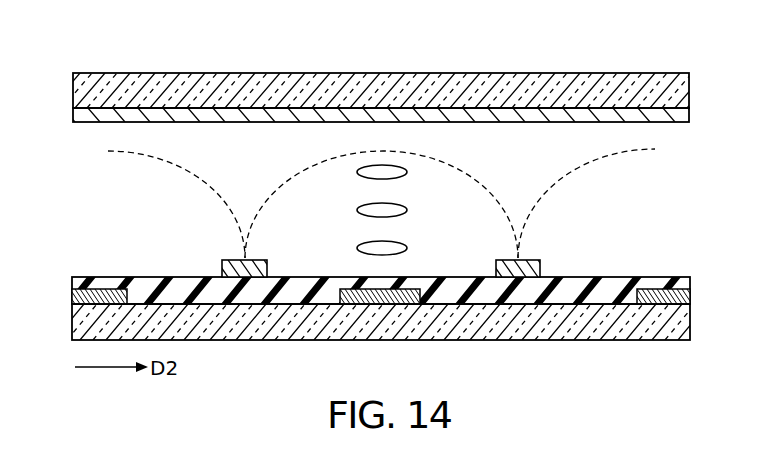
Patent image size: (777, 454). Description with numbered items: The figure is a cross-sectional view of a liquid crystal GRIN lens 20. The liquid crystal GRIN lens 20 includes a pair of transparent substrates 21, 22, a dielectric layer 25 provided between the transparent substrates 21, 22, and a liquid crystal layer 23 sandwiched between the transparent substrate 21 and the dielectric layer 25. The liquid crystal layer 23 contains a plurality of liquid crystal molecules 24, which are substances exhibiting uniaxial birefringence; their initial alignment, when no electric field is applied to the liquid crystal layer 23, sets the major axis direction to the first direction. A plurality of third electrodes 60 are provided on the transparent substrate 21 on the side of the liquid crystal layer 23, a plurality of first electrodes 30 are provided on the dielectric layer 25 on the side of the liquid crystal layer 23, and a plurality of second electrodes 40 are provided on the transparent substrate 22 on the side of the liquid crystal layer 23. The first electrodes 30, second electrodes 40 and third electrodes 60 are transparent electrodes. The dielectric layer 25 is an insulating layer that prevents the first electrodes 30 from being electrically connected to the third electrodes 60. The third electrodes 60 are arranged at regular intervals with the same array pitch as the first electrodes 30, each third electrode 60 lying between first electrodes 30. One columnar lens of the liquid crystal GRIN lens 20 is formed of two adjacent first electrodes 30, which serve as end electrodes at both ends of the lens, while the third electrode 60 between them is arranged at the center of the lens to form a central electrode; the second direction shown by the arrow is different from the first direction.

The liquid crystal GRIN lens 20 is at (395, 47).
The transparent substrate 22 is at (690, 84).
The second electrode 40 is at (690, 114).
The liquid crystal layer 23 is at (693, 128).
The liquid crystal molecules 24 is at (408, 249).
The first electrode 30 is at (267, 272).
The dielectric layer 25 is at (519, 290).
The third electrode 60 is at (72, 295).
The transparent substrate 21 is at (690, 319).